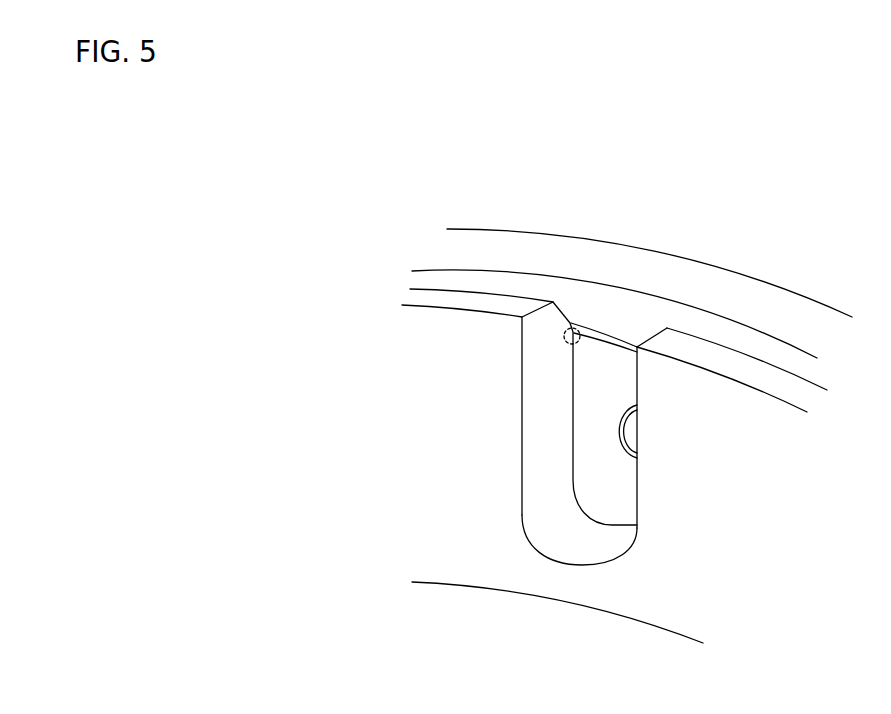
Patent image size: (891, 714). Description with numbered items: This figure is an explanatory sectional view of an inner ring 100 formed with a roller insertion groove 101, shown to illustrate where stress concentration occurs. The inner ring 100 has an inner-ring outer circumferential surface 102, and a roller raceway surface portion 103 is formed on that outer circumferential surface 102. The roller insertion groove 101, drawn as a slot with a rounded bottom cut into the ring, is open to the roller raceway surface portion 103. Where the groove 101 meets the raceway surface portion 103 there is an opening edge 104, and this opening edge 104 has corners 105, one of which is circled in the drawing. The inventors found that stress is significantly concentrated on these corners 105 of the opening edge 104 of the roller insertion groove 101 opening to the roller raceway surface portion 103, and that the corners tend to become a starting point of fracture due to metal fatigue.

The inner ring 100 is at (417, 220).
The roller insertion groove 101 is at (538, 497).
The inner-ring outer circumferential surface 102 is at (697, 278).
The roller raceway surface portion 103 is at (522, 290).
The opening edge 104 is at (600, 343).
The corners 105 is at (565, 343).